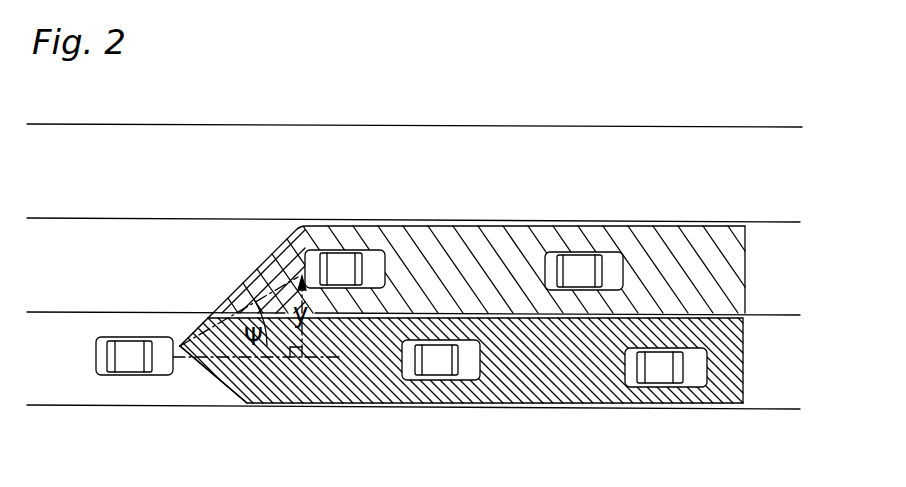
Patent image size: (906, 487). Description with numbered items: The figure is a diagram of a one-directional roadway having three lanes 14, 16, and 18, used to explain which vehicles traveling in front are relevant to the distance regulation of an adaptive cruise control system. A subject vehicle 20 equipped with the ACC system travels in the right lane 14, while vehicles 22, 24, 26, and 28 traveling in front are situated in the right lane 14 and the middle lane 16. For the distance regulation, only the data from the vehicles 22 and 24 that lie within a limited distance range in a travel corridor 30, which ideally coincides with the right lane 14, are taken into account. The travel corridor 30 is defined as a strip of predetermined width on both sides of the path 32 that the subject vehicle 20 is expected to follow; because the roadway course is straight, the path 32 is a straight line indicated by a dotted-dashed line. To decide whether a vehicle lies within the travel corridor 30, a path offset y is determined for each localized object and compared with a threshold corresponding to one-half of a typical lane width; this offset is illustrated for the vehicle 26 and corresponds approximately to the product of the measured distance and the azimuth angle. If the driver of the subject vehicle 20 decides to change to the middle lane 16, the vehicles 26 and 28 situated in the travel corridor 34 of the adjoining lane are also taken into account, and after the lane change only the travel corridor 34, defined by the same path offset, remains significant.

The right lane 14 is at (68, 375).
The middle lane 16 is at (68, 283).
The lane 18 is at (68, 188).
The subject vehicle 20 is at (133, 335).
The vehicle traveling in front 22 is at (427, 387).
The vehicle traveling in front 24 is at (650, 388).
The vehicle traveling in front 26 is at (347, 248).
The vehicle traveling in front 28 is at (580, 250).
The travel corridor 30 is at (742, 372).
The path 32 is at (230, 376).
The travel corridor 34 is at (745, 283).